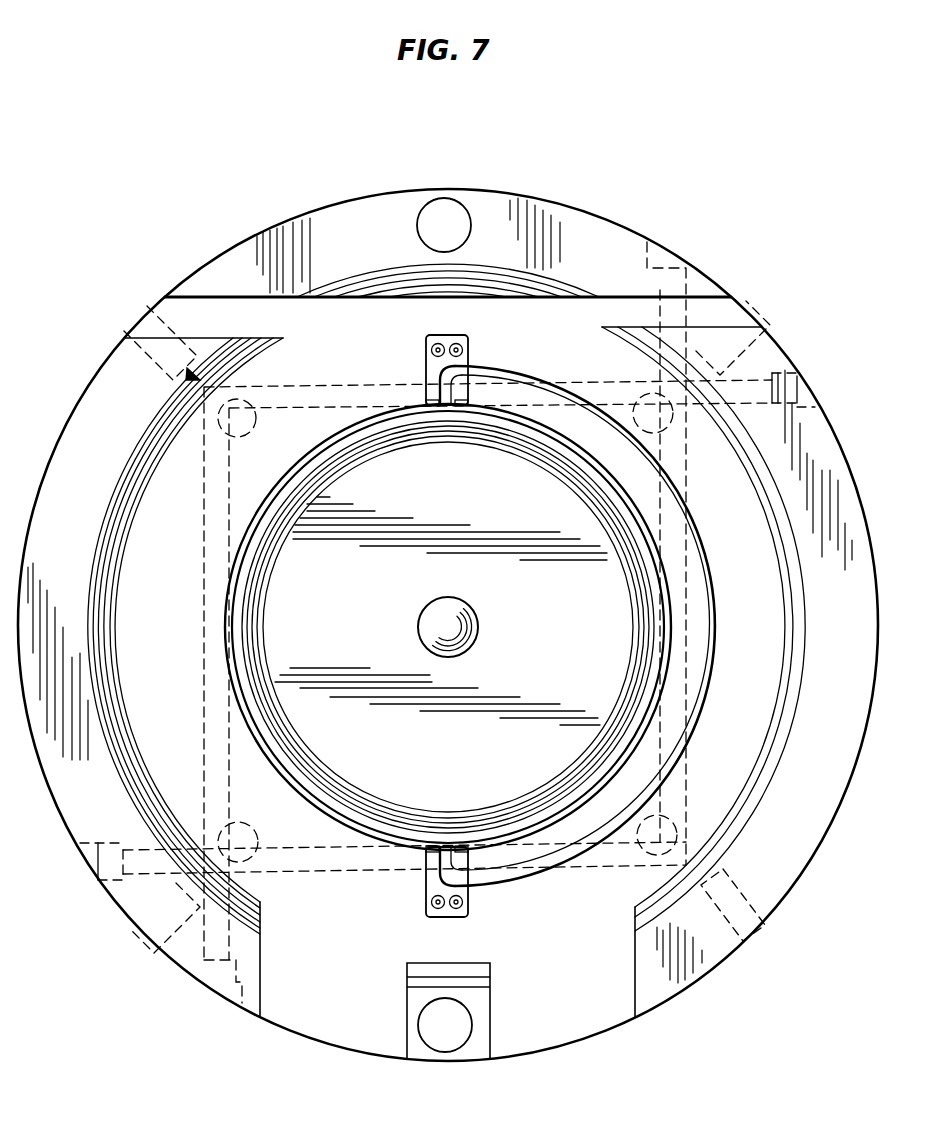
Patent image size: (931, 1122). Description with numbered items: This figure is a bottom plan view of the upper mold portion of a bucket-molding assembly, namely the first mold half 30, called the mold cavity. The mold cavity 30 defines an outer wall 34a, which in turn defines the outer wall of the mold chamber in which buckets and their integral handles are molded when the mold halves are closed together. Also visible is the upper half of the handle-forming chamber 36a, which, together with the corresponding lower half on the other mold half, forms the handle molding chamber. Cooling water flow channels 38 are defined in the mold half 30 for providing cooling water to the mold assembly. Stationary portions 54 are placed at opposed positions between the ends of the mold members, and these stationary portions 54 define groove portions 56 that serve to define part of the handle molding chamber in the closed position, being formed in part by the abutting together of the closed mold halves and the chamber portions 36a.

The first mold half 30 is at (218, 245).
The cooling water flow channels 38 is at (300, 386).
The outer wall 34a is at (387, 420).
The upper half of handle-forming chamber 36a is at (702, 598).
The stationary portions 54 is at (467, 357).
The groove portions 56 is at (427, 363).